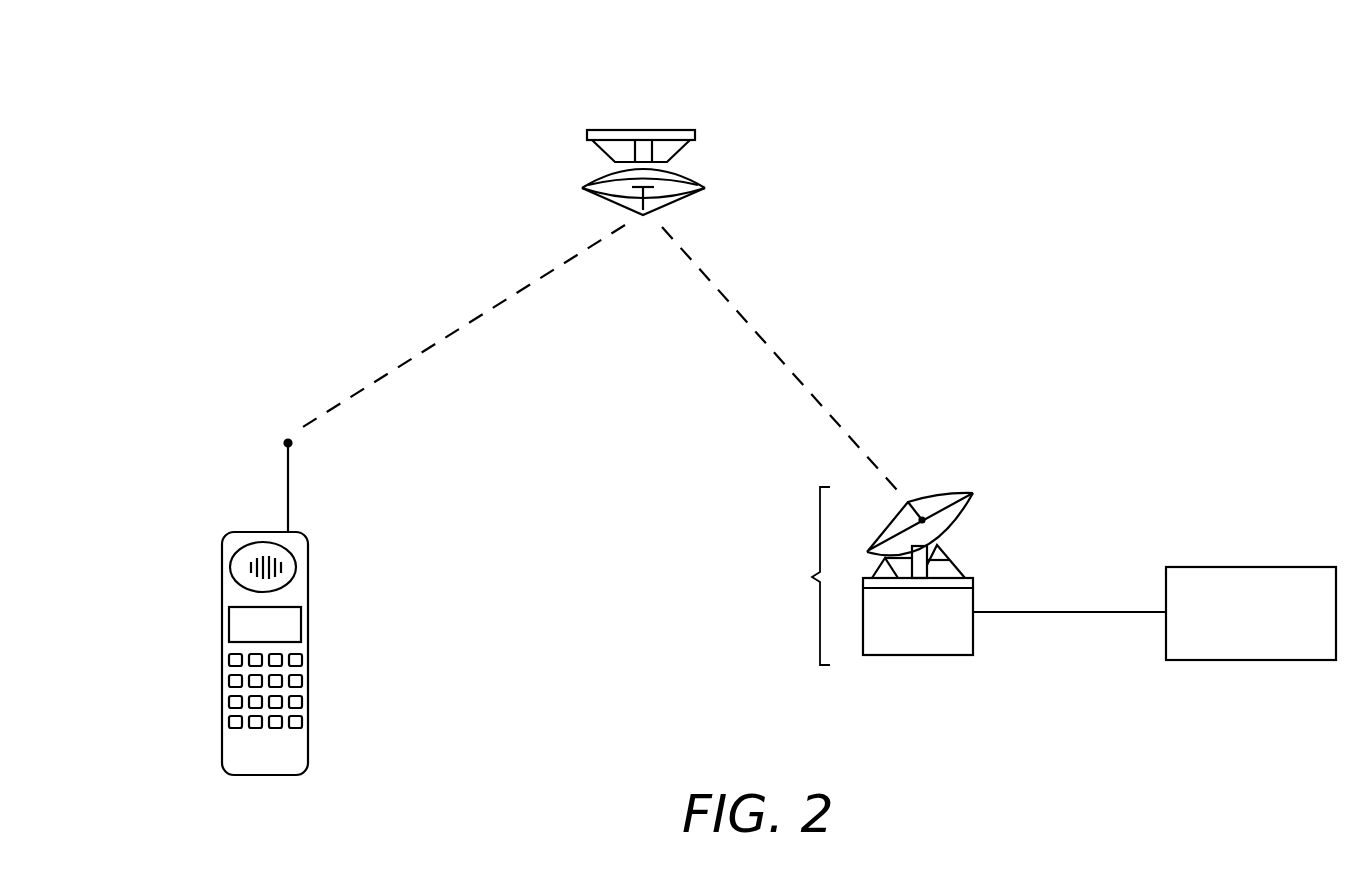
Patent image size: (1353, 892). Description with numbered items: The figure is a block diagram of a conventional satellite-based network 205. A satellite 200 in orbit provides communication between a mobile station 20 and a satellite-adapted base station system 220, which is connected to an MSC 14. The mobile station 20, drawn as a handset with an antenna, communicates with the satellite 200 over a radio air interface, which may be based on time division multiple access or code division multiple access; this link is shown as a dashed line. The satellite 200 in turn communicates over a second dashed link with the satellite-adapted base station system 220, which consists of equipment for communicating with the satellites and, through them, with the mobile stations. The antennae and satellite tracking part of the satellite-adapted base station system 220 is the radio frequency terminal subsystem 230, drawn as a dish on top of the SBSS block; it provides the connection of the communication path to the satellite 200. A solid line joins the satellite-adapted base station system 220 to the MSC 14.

The satellite 200 is at (695, 177).
The satellite-based network 205 is at (1178, 243).
The mobile station 20 is at (222, 661).
The satellite-adapted base station system 220 is at (900, 576).
The radio frequency terminal subsystem 230 is at (952, 550).
The mobile switching center 14 is at (1247, 567).